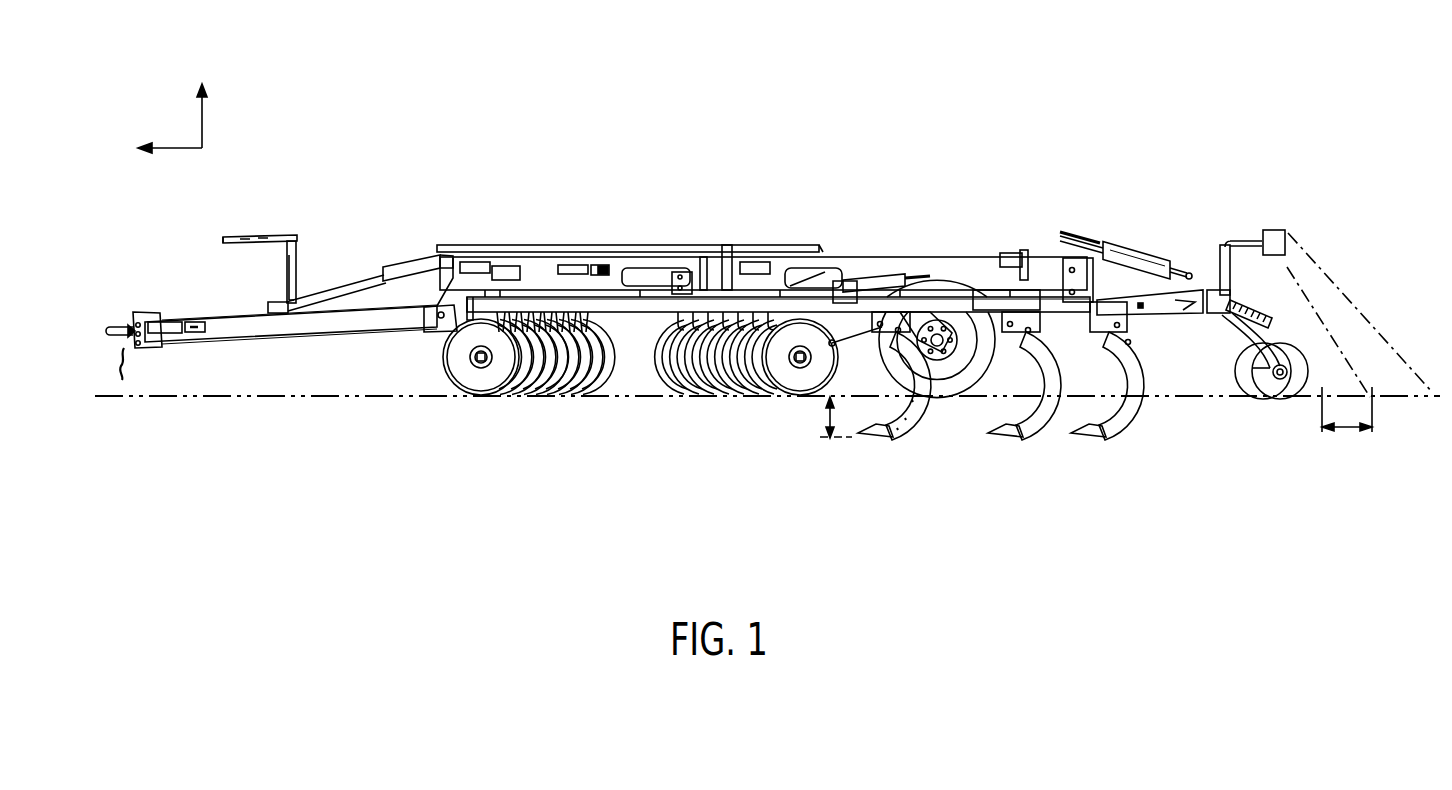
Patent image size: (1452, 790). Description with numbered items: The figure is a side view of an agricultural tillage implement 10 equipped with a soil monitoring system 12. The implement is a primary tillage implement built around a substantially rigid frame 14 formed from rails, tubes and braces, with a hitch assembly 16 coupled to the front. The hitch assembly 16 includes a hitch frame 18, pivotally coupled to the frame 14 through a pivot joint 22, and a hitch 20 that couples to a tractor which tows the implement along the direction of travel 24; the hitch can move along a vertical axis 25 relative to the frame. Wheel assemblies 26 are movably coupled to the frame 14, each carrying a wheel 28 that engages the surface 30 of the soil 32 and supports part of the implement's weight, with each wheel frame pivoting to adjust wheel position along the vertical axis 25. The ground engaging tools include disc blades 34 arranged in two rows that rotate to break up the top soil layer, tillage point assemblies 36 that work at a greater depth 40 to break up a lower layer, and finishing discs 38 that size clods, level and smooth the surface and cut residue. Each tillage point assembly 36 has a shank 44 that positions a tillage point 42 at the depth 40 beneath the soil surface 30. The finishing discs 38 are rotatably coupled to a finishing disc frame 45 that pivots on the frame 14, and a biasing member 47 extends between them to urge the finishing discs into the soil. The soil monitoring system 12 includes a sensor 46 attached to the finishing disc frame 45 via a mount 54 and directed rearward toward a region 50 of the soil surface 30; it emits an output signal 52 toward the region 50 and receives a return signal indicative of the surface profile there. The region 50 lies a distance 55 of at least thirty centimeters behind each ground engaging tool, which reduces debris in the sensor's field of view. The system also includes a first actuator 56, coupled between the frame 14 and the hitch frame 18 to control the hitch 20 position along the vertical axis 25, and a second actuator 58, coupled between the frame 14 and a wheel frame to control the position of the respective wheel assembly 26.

The agricultural tillage implement 10 is at (386, 163).
The soil monitoring system 12 is at (280, 204).
The frame 14 is at (775, 262).
The hitch assembly 16 is at (209, 297).
The hitch frame 18 is at (257, 333).
The hitch 20 is at (108, 325).
The pivot joint 22 is at (443, 314).
The direction of travel 24 is at (184, 146).
The vertical axis 25 is at (205, 140).
The wheel assembly 26 is at (929, 228).
The wheel 28 is at (937, 285).
The surface 30 is at (184, 394).
The soil 32 is at (225, 443).
The disc blade 34 is at (532, 424).
The tillage point assembly 36 is at (995, 455).
The finishing disc 38 is at (1229, 414).
The depth 40 is at (825, 417).
The tillage point 42 is at (877, 432).
The shank 44 is at (913, 403).
The finishing disc frame 45 is at (1152, 310).
The sensor 46 is at (1275, 228).
The biasing member 47 is at (1127, 257).
The region 50 is at (1392, 398).
The output signal 52 is at (1360, 312).
The mount 54 is at (1257, 241).
The distance 55 is at (1348, 430).
The first actuator 56 is at (340, 288).
The second actuator 58 is at (887, 270).